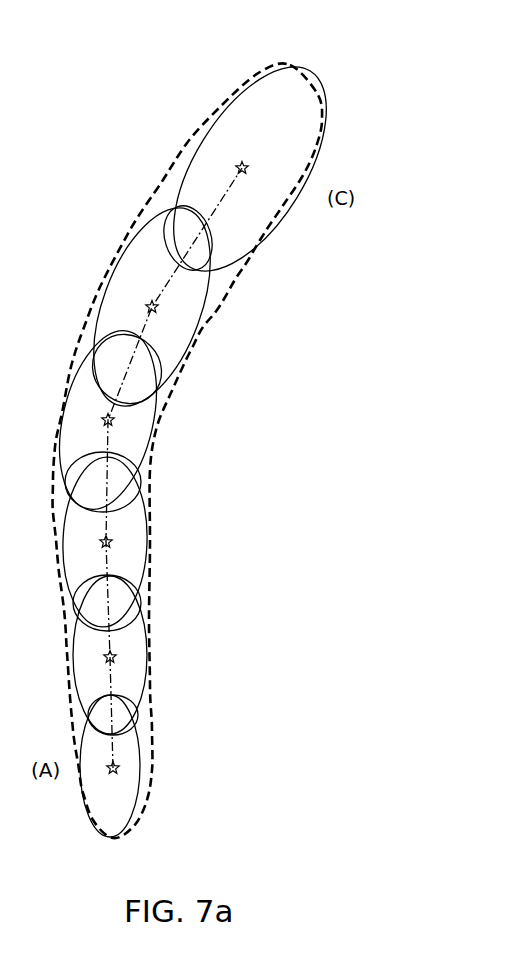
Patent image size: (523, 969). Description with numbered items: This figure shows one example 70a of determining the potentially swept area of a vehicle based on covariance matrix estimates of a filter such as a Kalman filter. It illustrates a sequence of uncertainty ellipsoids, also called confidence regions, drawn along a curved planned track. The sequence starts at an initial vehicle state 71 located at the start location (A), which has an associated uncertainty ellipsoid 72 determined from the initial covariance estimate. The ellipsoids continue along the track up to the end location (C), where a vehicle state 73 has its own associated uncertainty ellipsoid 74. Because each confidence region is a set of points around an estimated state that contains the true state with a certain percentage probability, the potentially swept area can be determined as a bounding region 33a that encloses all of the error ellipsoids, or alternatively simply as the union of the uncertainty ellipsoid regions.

The example of determining the potentially swept area 70a is at (110, 53).
The bounding region 33a is at (225, 292).
The initial vehicle state 71 is at (120, 767).
The uncertainty ellipsoid 72 is at (142, 722).
The vehicle state 73 is at (246, 164).
The uncertainty ellipsoid 74 is at (250, 247).